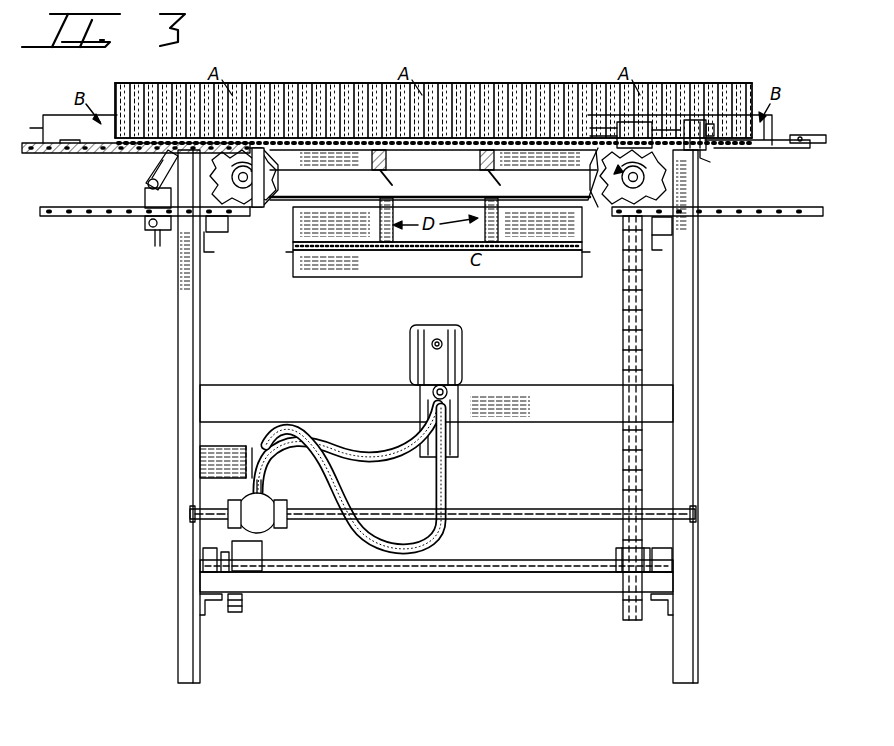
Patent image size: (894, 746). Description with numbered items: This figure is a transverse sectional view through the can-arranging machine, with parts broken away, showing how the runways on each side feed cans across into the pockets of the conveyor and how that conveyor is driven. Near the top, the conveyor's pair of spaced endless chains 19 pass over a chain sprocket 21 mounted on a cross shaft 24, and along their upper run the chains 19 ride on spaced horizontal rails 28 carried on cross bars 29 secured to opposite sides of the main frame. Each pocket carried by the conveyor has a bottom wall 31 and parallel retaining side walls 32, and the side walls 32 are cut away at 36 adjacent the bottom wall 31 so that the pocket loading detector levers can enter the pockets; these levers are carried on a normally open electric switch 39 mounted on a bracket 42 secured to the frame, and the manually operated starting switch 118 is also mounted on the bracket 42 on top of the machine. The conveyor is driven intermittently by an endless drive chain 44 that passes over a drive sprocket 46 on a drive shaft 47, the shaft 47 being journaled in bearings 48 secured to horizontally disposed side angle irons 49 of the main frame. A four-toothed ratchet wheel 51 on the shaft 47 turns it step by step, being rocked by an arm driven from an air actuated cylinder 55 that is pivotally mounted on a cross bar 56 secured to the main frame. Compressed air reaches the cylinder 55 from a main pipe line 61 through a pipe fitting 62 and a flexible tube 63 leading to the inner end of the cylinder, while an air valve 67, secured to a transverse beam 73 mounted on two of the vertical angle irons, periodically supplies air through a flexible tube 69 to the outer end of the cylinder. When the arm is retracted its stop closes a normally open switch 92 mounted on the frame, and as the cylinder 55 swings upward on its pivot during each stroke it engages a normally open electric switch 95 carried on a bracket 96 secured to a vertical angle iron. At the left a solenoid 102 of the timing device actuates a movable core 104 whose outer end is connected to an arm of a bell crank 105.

The endless chain 19 is at (380, 216).
The chain sprocket 21 is at (453, 181).
The cross shaft 24 is at (280, 206).
The horizontal rail 28 is at (380, 170).
The cross bar 29 is at (434, 175).
The bottom wall 31 is at (437, 258).
The side wall 32 is at (440, 272).
The cut away 36 is at (290, 254).
The electric switch 39 is at (635, 135).
The bracket 42 is at (717, 162).
The endless drive chain 44 is at (624, 334).
The drive sprocket 46 is at (618, 556).
The drive shaft 47 is at (512, 570).
The bearing 48 is at (212, 570).
The side angle iron 49 is at (208, 608).
The ratchet wheel 51 is at (244, 606).
The air actuated cylinder 55 is at (266, 505).
The cross bar 56 is at (516, 512).
The main pipe line 61 is at (432, 392).
The pipe fitting 62 is at (436, 400).
The flexible tube 63 is at (446, 490).
The air valve 67 is at (462, 364).
The flexible tube 69 is at (380, 456).
The transverse beam 73 is at (535, 396).
The switch 92 is at (264, 553).
The electric switch 95 is at (252, 448).
The bracket 96 is at (228, 470).
The solenoid 102 is at (146, 201).
The movable core 104 is at (148, 183).
The bell crank 105 is at (160, 160).
The starting switch 118 is at (706, 128).